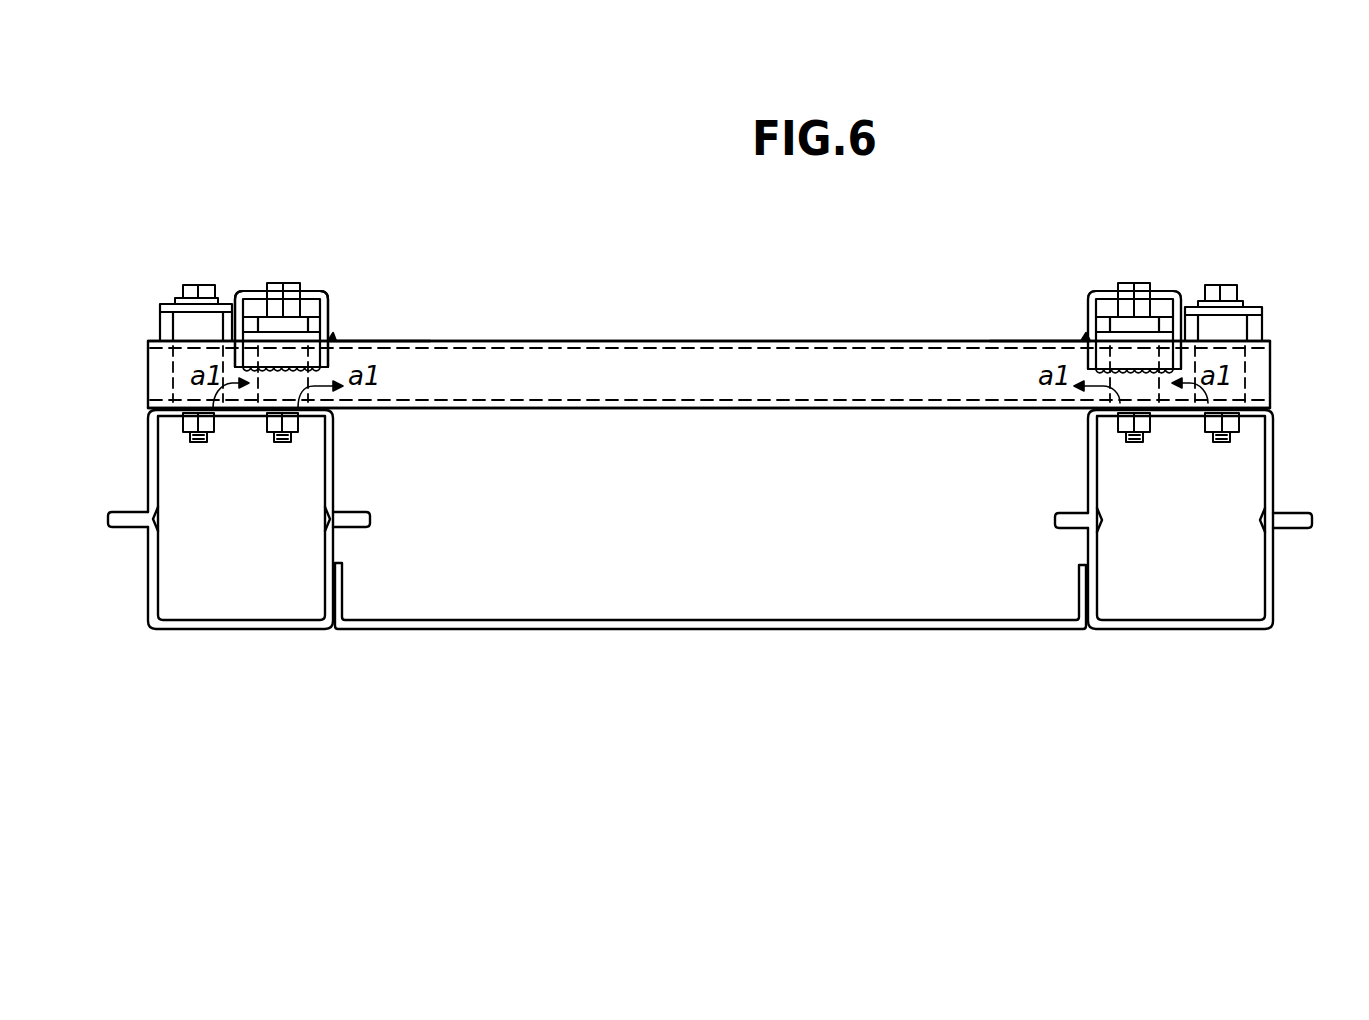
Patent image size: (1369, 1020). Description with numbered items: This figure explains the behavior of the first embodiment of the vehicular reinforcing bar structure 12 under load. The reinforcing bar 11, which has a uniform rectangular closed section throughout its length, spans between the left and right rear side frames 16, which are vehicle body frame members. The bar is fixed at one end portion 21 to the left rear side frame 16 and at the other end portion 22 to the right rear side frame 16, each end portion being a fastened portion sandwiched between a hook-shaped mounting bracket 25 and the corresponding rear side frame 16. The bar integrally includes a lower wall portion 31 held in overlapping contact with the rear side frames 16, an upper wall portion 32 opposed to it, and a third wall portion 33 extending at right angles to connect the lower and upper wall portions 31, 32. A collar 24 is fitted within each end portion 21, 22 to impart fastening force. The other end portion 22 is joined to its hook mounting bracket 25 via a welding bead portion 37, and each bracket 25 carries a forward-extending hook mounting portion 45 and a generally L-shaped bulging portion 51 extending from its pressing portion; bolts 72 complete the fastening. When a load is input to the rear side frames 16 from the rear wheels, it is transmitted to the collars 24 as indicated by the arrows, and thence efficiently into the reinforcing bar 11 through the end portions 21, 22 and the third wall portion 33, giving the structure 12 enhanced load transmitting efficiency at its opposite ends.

The reinforcing bar 11 is at (623, 336).
The vehicular reinforcing bar structure 12 is at (410, 186).
The rear side frame 16 is at (243, 674).
The one end portion 21 is at (1040, 341).
The other end portion 22 is at (375, 341).
The collar 24 is at (172, 386).
The hook mounting bracket 25 is at (238, 247).
The first or lower wall portion 31 is at (748, 410).
The second or upper wall portion 32 is at (748, 341).
The third wall portion 33 is at (797, 372).
The welding bead portion 37 is at (334, 338).
The hook mounting portion 45 is at (322, 291).
The bulging portion 51 is at (158, 318).
The bolt 72 is at (189, 285).